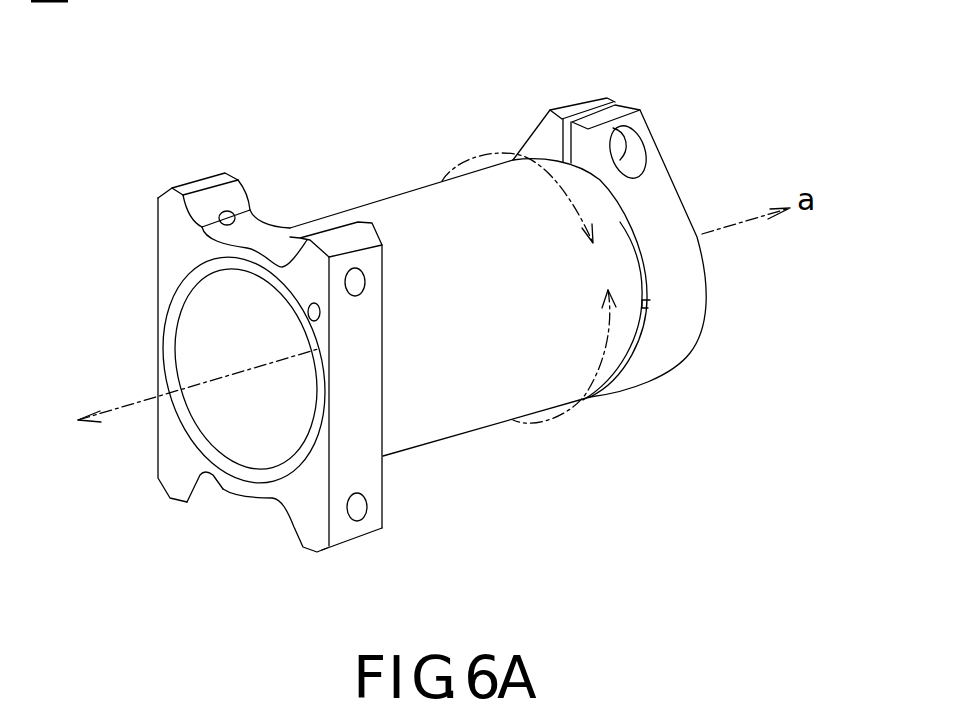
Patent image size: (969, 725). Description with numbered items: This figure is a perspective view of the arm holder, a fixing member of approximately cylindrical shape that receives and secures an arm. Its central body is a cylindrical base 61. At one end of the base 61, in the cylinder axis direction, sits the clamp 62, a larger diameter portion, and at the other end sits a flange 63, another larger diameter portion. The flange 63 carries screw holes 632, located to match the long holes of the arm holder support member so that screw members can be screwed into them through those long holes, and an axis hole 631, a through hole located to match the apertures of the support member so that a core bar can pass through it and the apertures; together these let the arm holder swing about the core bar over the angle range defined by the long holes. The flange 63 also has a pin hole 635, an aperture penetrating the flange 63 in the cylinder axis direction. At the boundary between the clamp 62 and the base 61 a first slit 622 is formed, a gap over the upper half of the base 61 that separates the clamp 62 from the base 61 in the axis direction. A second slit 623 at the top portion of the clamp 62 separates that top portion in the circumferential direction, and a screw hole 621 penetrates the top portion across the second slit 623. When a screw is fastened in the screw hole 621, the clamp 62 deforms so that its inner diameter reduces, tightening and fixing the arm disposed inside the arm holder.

The base 61 is at (425, 227).
The clamp 62 is at (672, 321).
The screw hole 621 is at (614, 143).
The first slit 622 is at (642, 282).
The second slit 623 is at (590, 113).
The flange 63 is at (350, 397).
The axis hole 631 is at (357, 521).
The screw hole 632 is at (257, 200).
The pin hole 635 is at (307, 308).